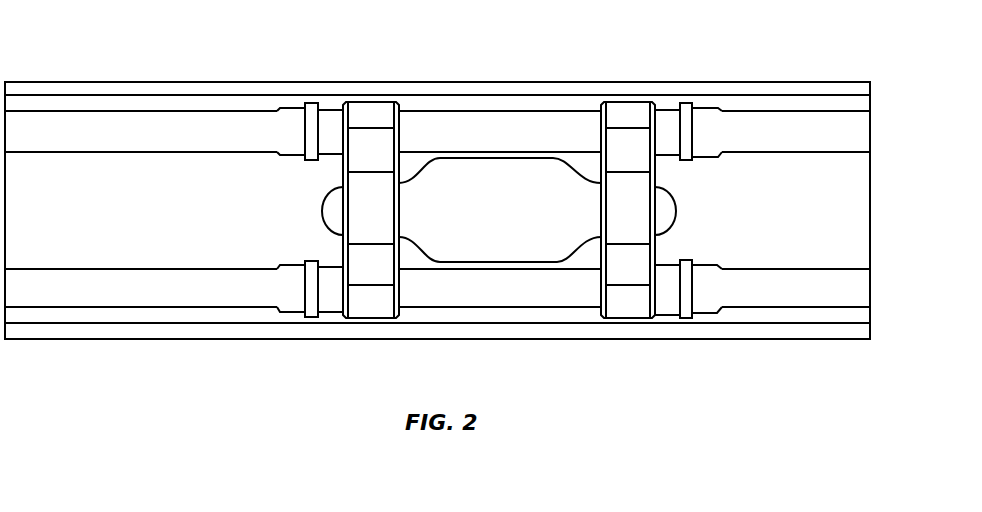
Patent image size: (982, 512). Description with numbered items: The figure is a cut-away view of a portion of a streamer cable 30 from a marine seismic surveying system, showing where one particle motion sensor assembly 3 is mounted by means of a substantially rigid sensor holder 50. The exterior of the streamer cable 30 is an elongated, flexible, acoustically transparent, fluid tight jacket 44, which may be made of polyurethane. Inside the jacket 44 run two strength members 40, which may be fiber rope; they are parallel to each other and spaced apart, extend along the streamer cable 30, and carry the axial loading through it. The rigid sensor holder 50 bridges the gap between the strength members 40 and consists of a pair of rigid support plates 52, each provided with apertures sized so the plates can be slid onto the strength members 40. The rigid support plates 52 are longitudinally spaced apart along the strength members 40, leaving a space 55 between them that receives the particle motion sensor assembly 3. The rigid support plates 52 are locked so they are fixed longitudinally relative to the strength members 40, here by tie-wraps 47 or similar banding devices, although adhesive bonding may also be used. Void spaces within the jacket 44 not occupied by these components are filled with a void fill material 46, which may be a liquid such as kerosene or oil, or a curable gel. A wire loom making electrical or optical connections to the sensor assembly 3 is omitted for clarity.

The particle motion sensor assembly 3 is at (492, 236).
The streamer cable 30 is at (184, 56).
The strength member 40 is at (110, 151).
The jacket 44 is at (807, 88).
The void fill material 46 is at (492, 213).
The tie-wrap 47 is at (312, 316).
The rigid sensor holder 50 is at (723, 67).
The rigid support plate 52 is at (380, 309).
The space 55 is at (405, 258).